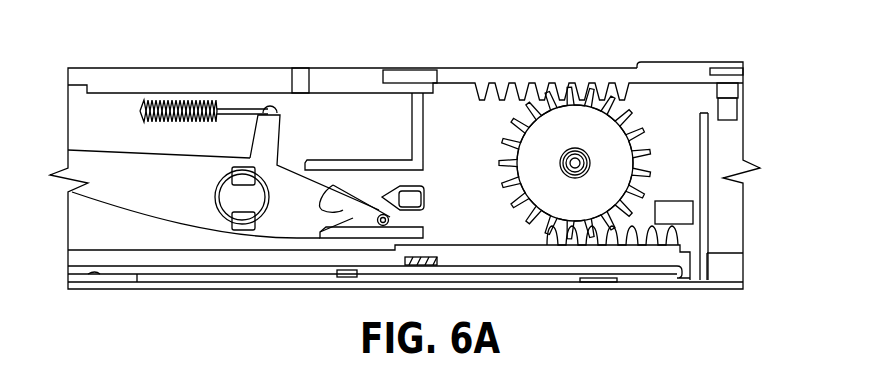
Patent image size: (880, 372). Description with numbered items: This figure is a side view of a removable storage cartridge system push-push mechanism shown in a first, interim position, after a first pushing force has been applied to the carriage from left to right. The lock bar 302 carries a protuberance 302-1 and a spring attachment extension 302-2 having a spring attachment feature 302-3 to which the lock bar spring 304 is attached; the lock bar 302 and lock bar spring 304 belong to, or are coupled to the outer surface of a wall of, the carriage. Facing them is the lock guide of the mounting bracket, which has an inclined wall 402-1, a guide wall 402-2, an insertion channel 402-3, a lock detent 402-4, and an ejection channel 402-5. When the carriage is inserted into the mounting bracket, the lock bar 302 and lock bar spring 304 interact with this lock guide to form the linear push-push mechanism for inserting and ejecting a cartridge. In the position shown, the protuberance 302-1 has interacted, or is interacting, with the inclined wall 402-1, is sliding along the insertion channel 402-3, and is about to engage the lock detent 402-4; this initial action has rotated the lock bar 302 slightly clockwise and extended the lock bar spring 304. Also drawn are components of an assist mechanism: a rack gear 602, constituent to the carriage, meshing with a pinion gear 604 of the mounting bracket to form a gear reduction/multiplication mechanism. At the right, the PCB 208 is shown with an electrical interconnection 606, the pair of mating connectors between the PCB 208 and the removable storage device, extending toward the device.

The lock bar 302 is at (97, 175).
The protuberance 302-1 is at (383, 228).
The spring attachment extension 302-2 is at (275, 137).
The spring attachment feature 302-3 is at (289, 110).
The lock bar spring 304 is at (203, 98).
The inclined wall 402-1 is at (343, 210).
The guide wall 402-2 is at (323, 227).
The insertion channel 402-3 is at (333, 226).
The lock detent 402-4 is at (388, 196).
The ejection channel 402-5 is at (342, 178).
The pinion gear 604 is at (617, 142).
The rack gear 602 is at (593, 260).
The PCB 208 is at (704, 145).
The electrical interconnection 606 is at (683, 210).